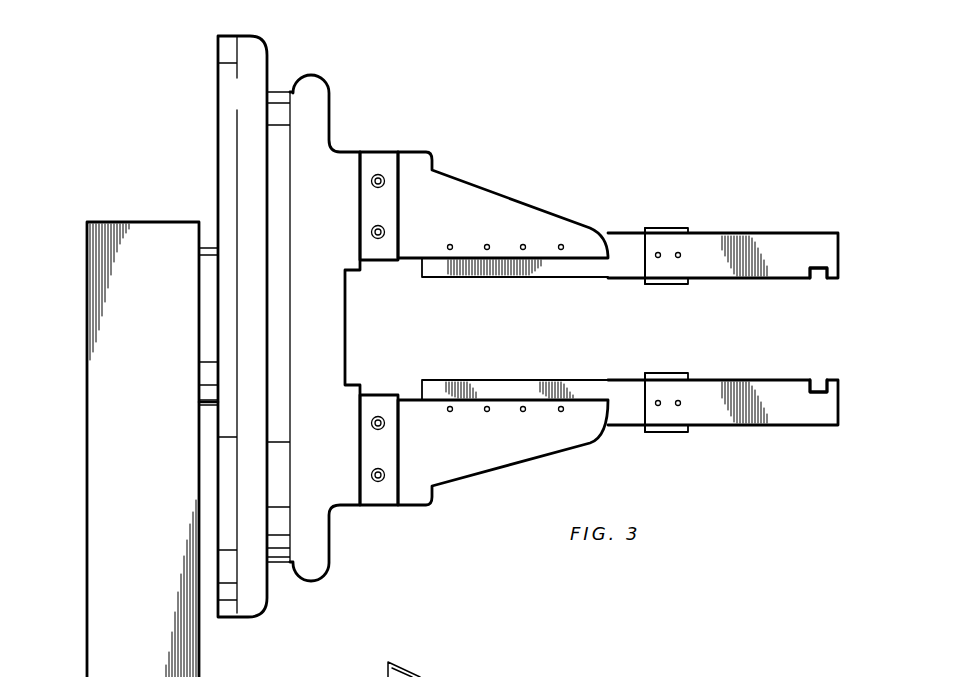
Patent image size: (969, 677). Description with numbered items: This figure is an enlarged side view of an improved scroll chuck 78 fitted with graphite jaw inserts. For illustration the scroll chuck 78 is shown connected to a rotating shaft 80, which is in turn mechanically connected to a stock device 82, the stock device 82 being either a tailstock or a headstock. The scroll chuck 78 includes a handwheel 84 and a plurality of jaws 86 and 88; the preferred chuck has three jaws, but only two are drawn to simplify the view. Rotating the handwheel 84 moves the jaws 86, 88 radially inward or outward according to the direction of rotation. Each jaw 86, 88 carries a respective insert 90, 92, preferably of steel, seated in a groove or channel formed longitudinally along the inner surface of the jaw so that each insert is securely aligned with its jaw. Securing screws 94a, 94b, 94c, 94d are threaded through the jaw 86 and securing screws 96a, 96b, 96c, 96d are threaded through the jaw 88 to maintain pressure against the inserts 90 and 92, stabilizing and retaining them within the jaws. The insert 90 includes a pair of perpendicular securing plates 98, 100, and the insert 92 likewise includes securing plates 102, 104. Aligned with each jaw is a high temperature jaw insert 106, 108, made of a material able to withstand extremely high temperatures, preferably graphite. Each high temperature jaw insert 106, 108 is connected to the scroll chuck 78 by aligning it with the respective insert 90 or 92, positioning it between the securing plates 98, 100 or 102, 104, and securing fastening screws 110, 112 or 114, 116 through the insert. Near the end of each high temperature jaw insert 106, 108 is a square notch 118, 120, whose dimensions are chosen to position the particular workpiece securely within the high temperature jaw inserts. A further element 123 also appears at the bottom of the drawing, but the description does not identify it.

The scroll chuck 78 is at (718, 121).
The rotating shaft 80 is at (208, 301).
The stock device 82 is at (153, 454).
The handwheel 84 is at (268, 53).
The jaw 86 is at (462, 183).
The jaw 88 is at (466, 477).
The insert 90 is at (532, 279).
The insert 92 is at (537, 380).
The securing screw 94a is at (448, 246).
The securing screw 94b is at (486, 245).
The securing screw 94c is at (522, 245).
The securing screw 94d is at (561, 245).
The securing screw 96a is at (449, 411).
The securing screw 96b is at (486, 411).
The securing screw 96c is at (523, 411).
The securing screw 96d is at (561, 411).
The securing plate 98 is at (660, 228).
The securing plate 100 is at (680, 284).
The securing plate 102 is at (672, 373).
The securing plate 104 is at (660, 432).
The high temperature jaw insert 106 is at (782, 233).
The high temperature jaw insert 108 is at (782, 425).
The fastening screw 110 is at (657, 257).
The fastening screw 112 is at (679, 254).
The fastening screw 114 is at (657, 401).
The fastening screw 116 is at (679, 405).
The square notch 118 is at (818, 279).
The square notch 120 is at (818, 380).
The tape 123 is at (374, 672).